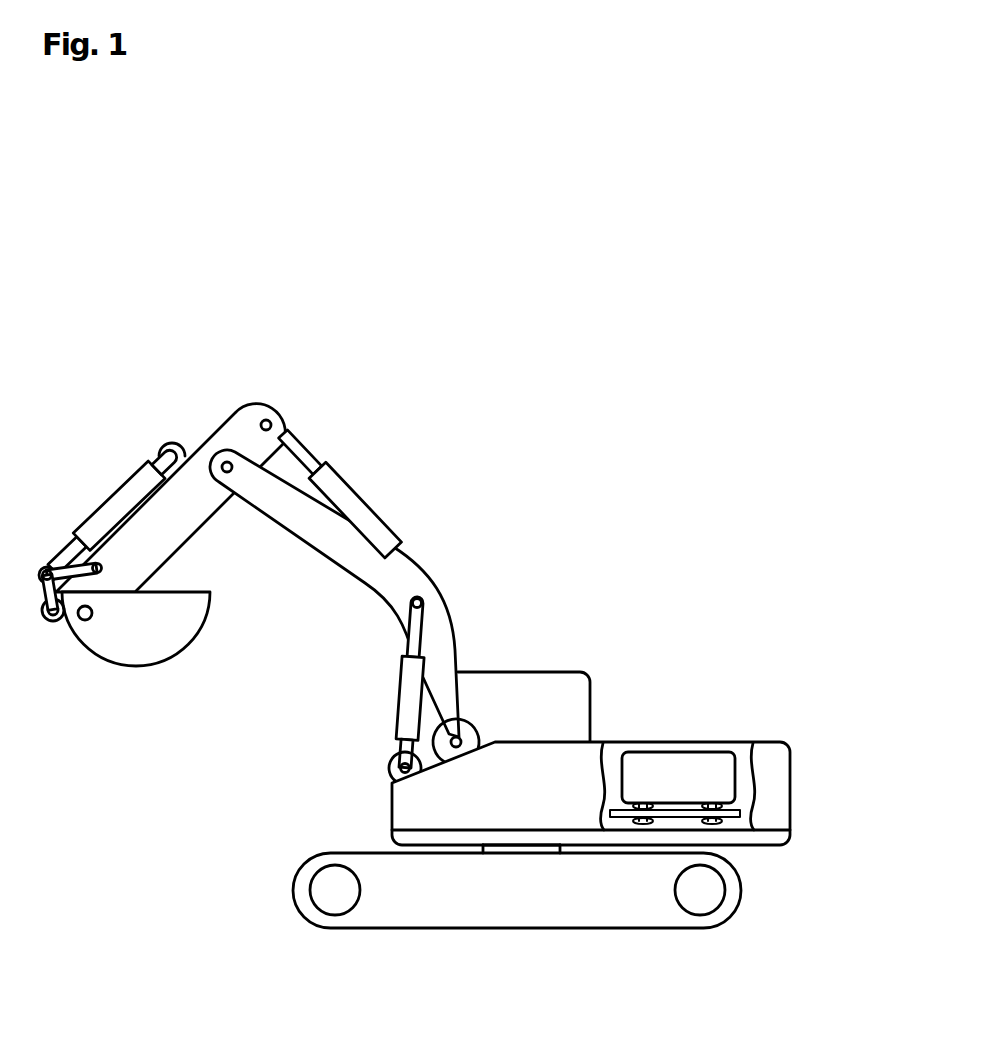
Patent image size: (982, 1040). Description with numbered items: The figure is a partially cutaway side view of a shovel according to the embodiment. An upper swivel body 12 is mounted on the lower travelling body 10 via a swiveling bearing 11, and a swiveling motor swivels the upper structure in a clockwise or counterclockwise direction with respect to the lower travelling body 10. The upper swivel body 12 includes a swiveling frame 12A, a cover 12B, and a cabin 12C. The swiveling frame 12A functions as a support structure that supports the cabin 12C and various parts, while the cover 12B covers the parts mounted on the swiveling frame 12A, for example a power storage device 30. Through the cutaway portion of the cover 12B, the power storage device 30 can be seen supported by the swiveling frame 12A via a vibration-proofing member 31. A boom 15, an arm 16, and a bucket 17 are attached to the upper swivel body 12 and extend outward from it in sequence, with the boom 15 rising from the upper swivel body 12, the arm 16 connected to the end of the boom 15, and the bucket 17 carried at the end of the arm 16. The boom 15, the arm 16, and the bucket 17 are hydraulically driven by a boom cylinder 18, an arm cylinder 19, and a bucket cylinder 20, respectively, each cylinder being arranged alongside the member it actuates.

The lower travelling body 10 is at (375, 929).
The swiveling bearing 11 is at (535, 857).
The upper swivel body 12 is at (630, 772).
The swiveling frame 12A is at (776, 846).
The cover 12B is at (791, 767).
The cabin 12C is at (583, 672).
The boom 15 is at (447, 617).
The arm 16 is at (235, 418).
The bucket 17 is at (113, 665).
The boom cylinder 18 is at (403, 688).
The arm cylinder 19 is at (338, 483).
The bucket cylinder 20 is at (130, 483).
The power storage device 30 is at (703, 753).
The vibration-proofing member 31 is at (718, 822).